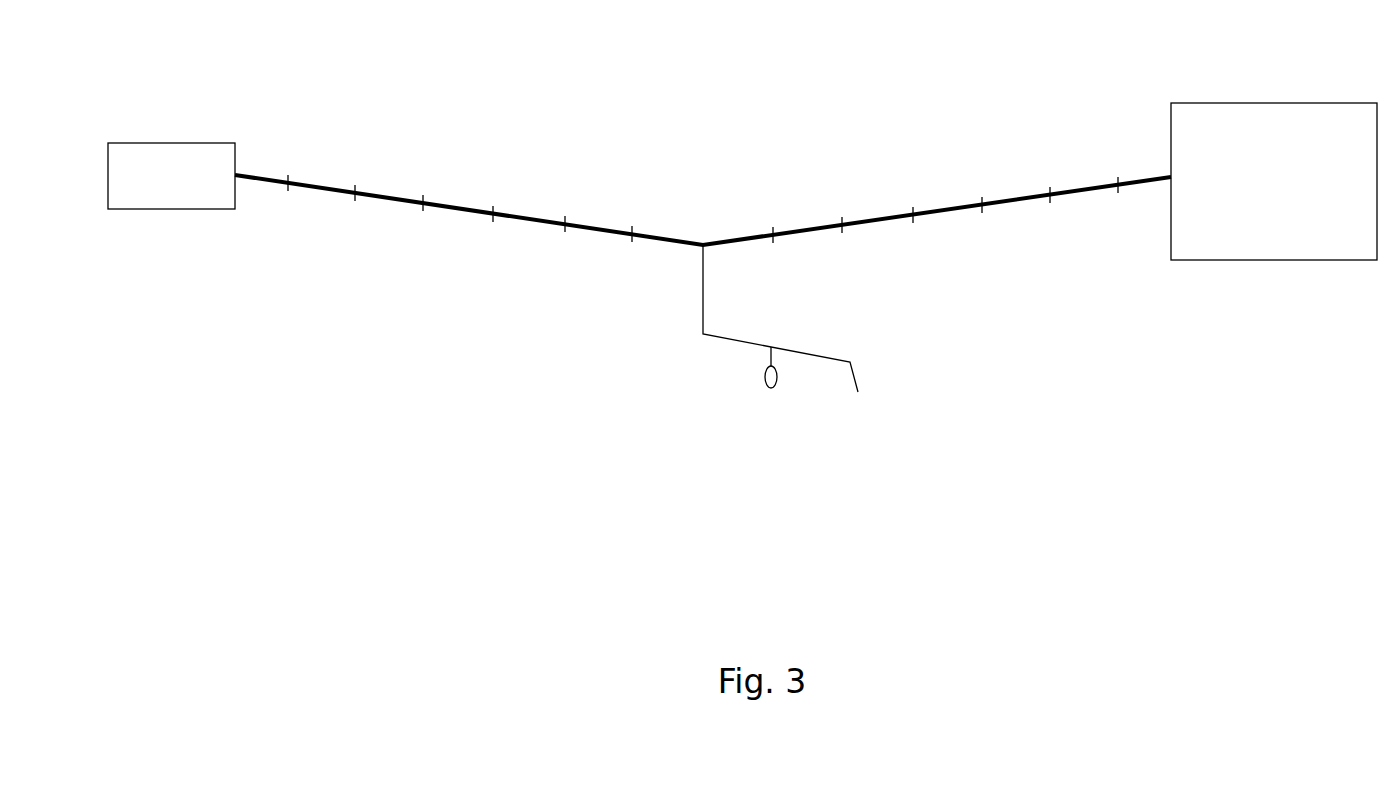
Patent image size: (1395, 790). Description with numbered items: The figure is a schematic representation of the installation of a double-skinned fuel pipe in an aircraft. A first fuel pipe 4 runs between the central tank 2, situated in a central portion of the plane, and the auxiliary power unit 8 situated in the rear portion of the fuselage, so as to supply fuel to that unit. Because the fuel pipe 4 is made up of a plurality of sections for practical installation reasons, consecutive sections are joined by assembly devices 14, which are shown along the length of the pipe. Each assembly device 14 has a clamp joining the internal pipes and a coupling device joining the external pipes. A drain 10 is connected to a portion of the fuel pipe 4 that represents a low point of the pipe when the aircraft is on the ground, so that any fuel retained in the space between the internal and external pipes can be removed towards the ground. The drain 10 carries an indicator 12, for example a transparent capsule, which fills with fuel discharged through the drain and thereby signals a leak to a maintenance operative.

The central tank 2 is at (1262, 103).
The first fuel pipe 4 is at (462, 214).
The auxiliary power unit 8 is at (164, 143).
The drain 10 is at (703, 301).
The indicator 12 is at (765, 377).
The assembly device 14 is at (421, 190).